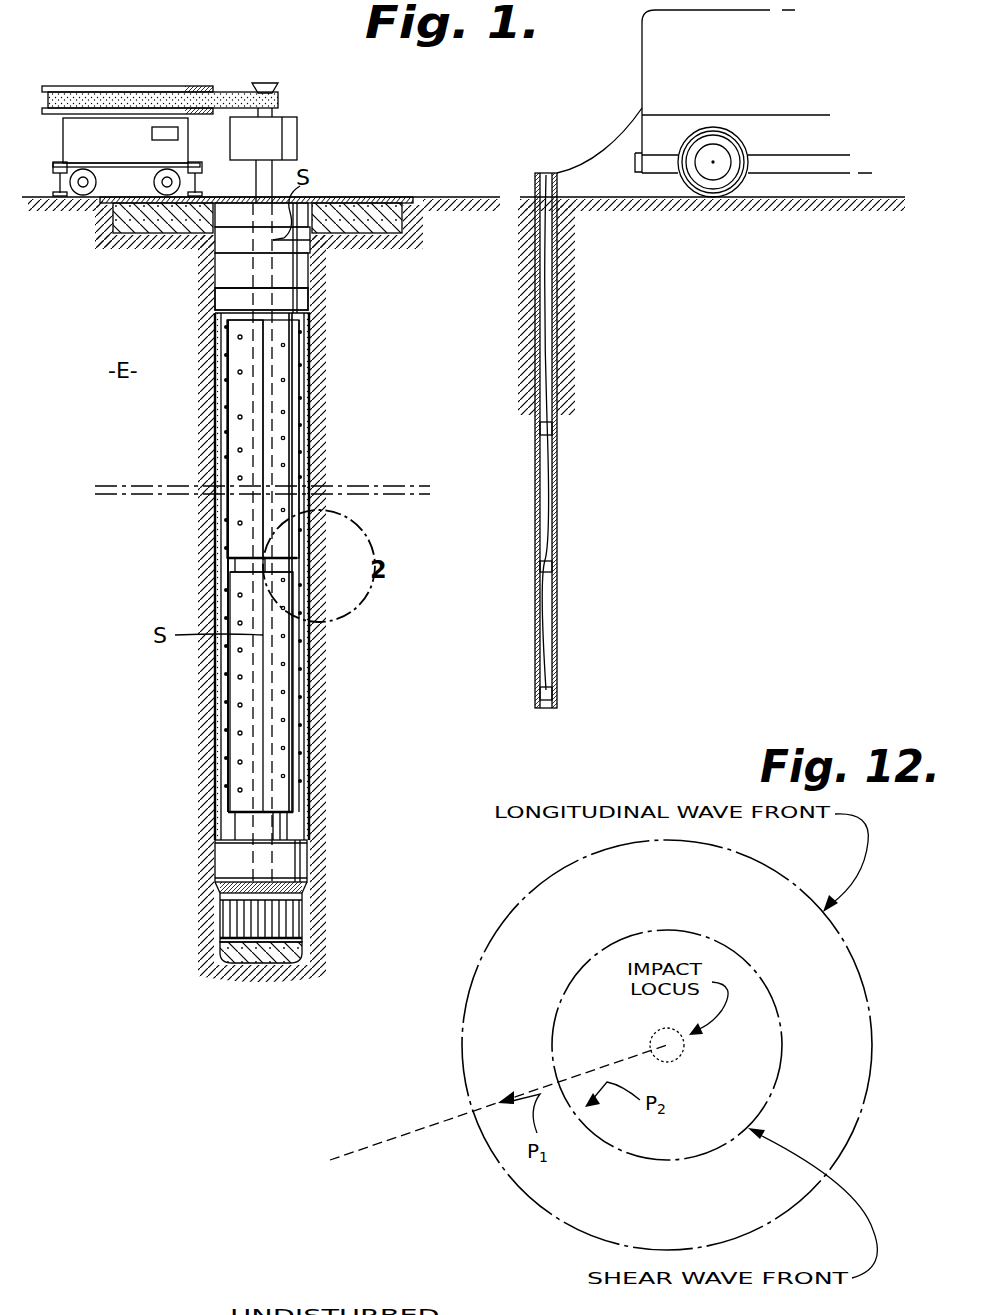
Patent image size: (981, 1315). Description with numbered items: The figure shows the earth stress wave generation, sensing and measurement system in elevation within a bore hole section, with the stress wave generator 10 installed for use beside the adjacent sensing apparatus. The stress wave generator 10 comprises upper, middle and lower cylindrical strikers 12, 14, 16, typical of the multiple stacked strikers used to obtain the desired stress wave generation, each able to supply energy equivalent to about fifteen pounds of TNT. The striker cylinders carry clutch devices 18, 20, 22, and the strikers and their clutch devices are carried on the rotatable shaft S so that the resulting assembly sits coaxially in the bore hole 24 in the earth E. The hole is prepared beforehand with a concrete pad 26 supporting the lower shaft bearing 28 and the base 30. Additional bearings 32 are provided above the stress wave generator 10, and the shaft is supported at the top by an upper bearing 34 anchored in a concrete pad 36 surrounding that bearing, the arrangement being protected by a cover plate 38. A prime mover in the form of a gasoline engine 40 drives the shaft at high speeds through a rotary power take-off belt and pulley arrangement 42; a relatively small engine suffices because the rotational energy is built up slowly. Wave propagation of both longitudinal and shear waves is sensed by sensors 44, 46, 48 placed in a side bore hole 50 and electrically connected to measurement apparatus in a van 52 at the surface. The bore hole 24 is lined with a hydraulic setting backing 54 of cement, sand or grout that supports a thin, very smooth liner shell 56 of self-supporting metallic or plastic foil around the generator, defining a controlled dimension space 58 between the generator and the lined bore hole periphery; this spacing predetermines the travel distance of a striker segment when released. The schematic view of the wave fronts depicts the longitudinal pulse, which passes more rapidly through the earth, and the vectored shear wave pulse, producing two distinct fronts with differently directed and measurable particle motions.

The stress wave generator 10 is at (345, 465).
The upper cylindrical striker 12 is at (285, 370).
The middle cylindrical striker 14 is at (240, 512).
The lower cylindrical striker 16 is at (282, 765).
The clutch device 18 is at (300, 298).
The clutch device 20 is at (235, 565).
The clutch device 22 is at (278, 827).
The bore hole 24 is at (218, 778).
The concrete pad 26 is at (245, 952).
The lower shaft bearing 28 is at (245, 920).
The base 30 is at (283, 865).
The additional bearings 32 is at (242, 268).
The upper bearing 34 is at (237, 215).
The concrete pad 36 is at (373, 226).
The cover plate 38 is at (372, 198).
The gasoline engine 40 is at (100, 134).
The rotary power take-off belt and pulley arrangement 42 is at (177, 92).
The sensor 44 is at (552, 430).
The sensor 46 is at (553, 568).
The sensor 48 is at (553, 698).
The side bore hole 50 is at (553, 468).
The van 52 is at (665, 70).
The backing 54 is at (305, 700).
The liner shell 56 is at (308, 640).
The controlled dimension space 58 is at (218, 708).